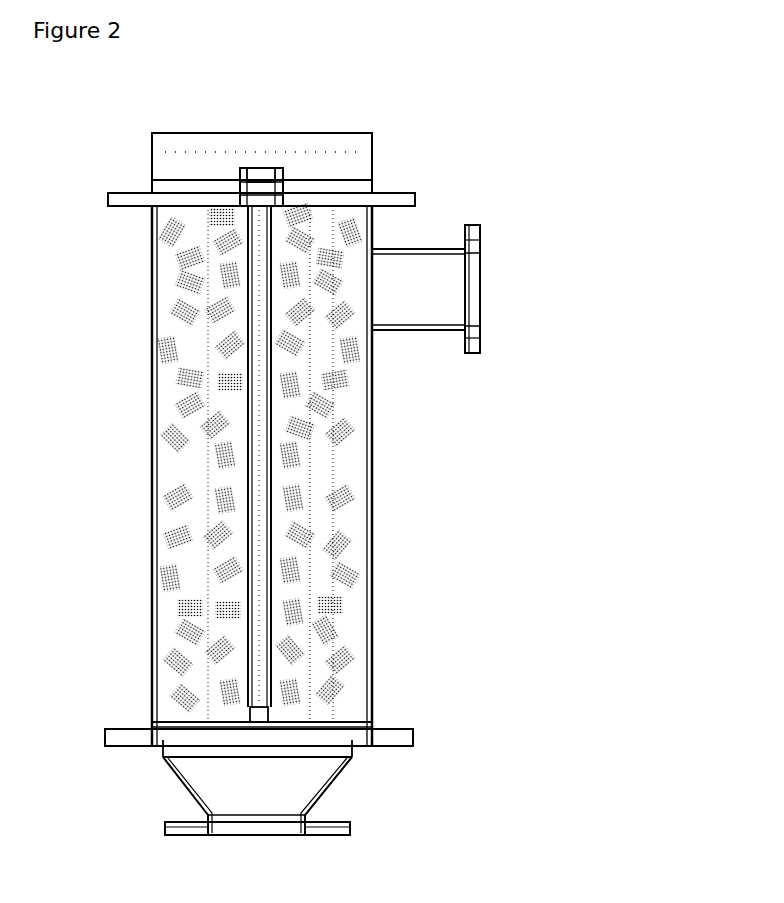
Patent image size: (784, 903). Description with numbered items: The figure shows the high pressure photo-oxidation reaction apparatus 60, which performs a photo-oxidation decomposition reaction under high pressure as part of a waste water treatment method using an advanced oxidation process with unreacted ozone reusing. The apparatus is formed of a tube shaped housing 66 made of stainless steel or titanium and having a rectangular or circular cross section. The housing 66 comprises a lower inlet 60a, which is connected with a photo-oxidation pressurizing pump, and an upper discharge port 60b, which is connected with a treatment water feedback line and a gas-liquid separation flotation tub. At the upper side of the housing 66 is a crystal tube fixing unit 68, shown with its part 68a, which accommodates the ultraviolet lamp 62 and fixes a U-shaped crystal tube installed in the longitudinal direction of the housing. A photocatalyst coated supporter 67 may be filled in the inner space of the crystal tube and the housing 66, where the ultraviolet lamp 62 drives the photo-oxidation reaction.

The high pressure photo-oxidation reaction apparatus 60 is at (287, 87).
The lower inlet 60a is at (282, 842).
The upper discharge port 60b is at (487, 280).
The ultraviolet lamp 62 is at (258, 417).
The tube shaped housing 66 is at (372, 476).
The photocatalyst coated supporter 67 is at (348, 540).
The crystal tube fixing unit 68 is at (347, 143).
The bearing cap 68a is at (357, 167).